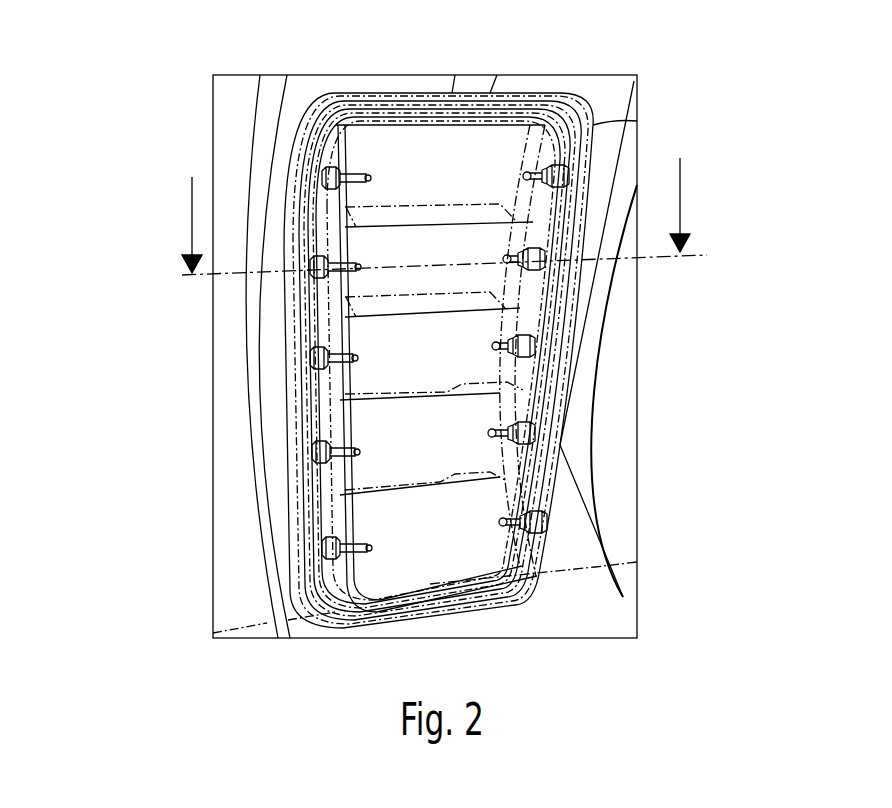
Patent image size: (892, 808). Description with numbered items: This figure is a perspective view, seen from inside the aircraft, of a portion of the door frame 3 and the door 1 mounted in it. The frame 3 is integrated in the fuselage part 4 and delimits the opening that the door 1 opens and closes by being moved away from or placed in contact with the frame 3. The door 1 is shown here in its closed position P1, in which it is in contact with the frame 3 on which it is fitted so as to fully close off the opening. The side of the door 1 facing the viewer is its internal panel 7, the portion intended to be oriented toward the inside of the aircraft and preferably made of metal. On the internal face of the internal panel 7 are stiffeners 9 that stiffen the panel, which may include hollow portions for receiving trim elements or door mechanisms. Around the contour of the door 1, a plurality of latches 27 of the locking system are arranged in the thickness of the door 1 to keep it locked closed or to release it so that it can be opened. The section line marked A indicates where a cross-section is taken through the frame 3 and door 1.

The door 1 is at (422, 363).
The door frame 3 is at (637, 121).
The fuselage part 4 is at (178, 70).
The internal panel 7 is at (383, 345).
The stiffeners 9 is at (447, 477).
The latches 27 is at (330, 548).
The closed position P1 is at (597, 105).
The section line A- A is at (192, 212).